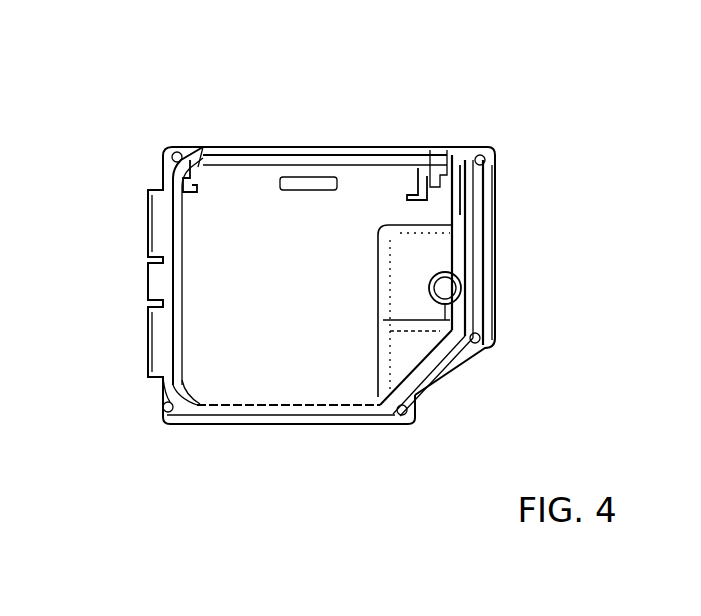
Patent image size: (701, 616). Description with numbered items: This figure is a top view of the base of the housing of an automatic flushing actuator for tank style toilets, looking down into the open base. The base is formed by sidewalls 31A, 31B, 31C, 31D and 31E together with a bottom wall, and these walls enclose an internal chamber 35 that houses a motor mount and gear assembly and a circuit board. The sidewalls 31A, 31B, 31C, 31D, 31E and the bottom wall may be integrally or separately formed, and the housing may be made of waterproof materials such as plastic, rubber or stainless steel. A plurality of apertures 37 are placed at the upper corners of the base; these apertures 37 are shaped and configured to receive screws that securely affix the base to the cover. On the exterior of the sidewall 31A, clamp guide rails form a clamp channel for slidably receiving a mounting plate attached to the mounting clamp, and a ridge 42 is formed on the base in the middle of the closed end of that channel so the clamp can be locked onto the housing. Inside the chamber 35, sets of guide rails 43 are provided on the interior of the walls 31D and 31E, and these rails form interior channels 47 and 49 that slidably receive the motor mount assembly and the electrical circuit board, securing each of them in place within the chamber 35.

The sidewall 31A is at (155, 388).
The sidewall 31B is at (283, 423).
The sidewall 31C is at (433, 378).
The sidewall 31D is at (493, 280).
The sidewall 31E is at (335, 147).
The internal chamber 35 is at (363, 187).
The apertures 37 is at (168, 160).
The ridge 42 is at (150, 278).
The guide rails 43 is at (458, 155).
The interior channel 47 is at (197, 172).
The interior channel 49 is at (413, 148).